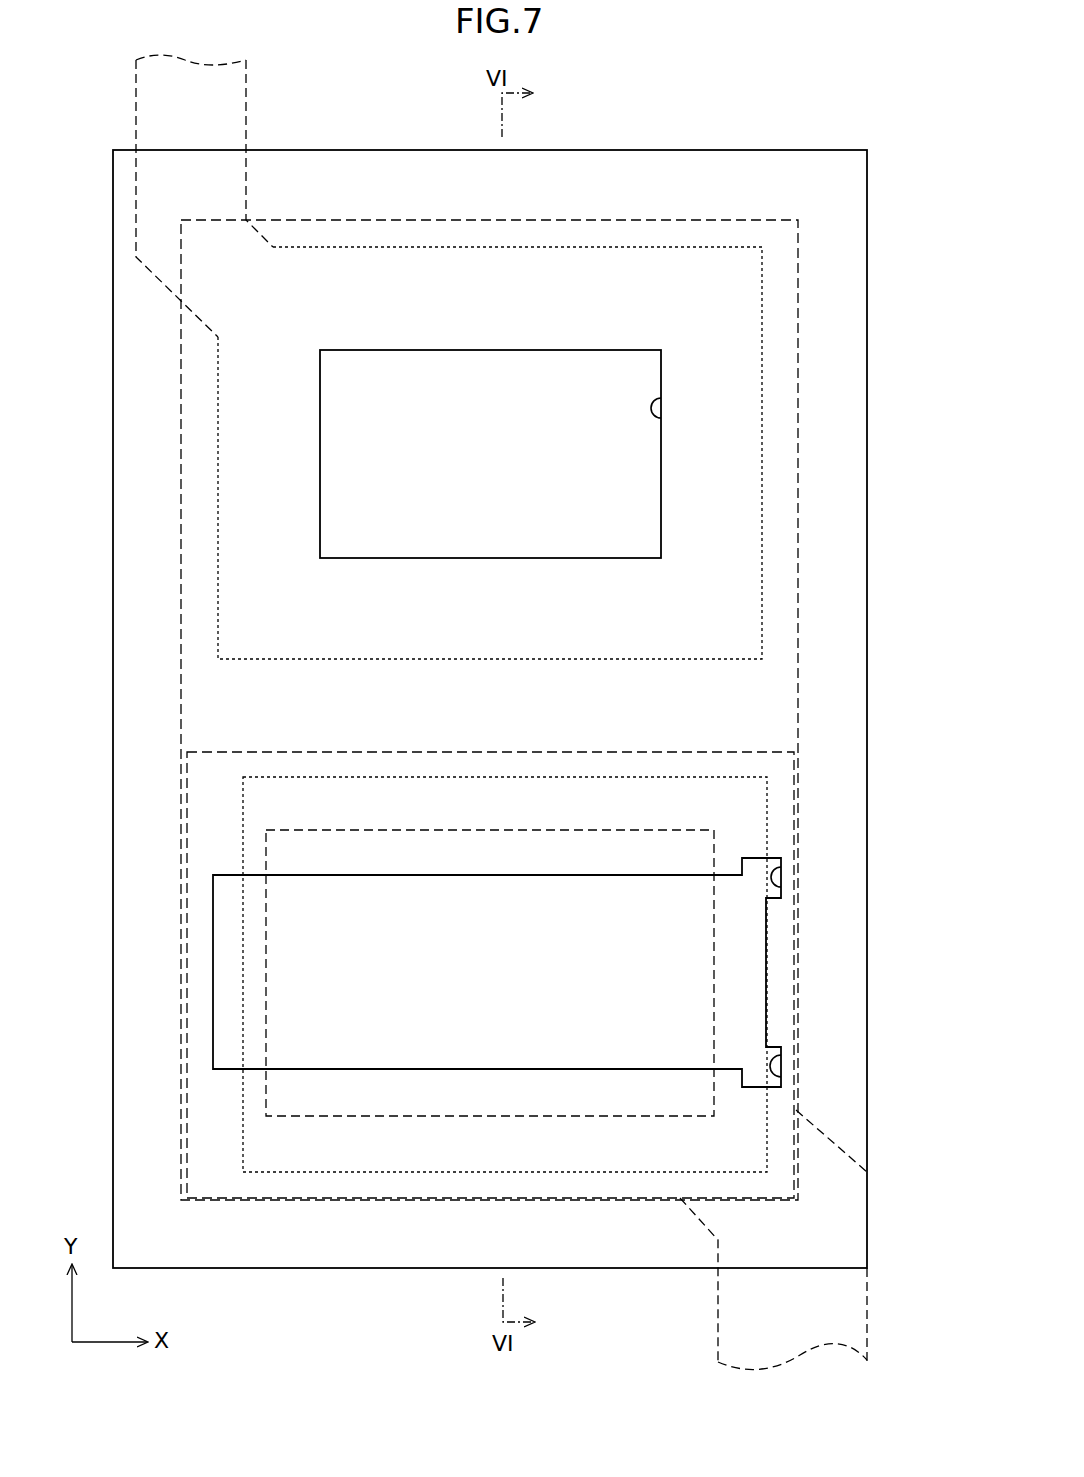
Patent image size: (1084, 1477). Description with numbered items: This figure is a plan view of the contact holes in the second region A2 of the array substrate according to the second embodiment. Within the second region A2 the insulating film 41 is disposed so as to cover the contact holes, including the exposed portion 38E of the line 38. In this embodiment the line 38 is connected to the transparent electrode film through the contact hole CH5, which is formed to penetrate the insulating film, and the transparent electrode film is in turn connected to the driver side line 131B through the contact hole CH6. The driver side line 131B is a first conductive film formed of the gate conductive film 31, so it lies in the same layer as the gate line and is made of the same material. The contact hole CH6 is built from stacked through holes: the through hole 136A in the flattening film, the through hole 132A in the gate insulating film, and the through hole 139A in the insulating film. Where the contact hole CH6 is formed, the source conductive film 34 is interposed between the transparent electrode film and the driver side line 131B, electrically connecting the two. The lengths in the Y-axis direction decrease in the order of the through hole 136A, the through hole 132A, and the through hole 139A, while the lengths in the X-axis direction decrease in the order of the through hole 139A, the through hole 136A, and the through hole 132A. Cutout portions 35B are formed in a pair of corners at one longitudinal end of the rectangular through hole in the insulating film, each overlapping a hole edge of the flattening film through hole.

The insulating film 41 is at (852, 228).
The second region A2 is at (739, 204).
The line 38 is at (713, 312).
The exposed portion of the line 38E is at (632, 454).
The contact hole CH5 is at (661, 397).
The source conductive film 34 is at (767, 722).
The cutout portions 35B is at (779, 870).
The driver side line 131B is at (555, 1039).
The gate conductive film 31 is at (212, 1354).
The through hole in the flattening film 136A is at (300, 1158).
The through hole in the gate insulating film 132A is at (338, 1100).
The through hole in the insulating film 139A is at (572, 1082).
The contact hole CH6 is at (572, 1080).